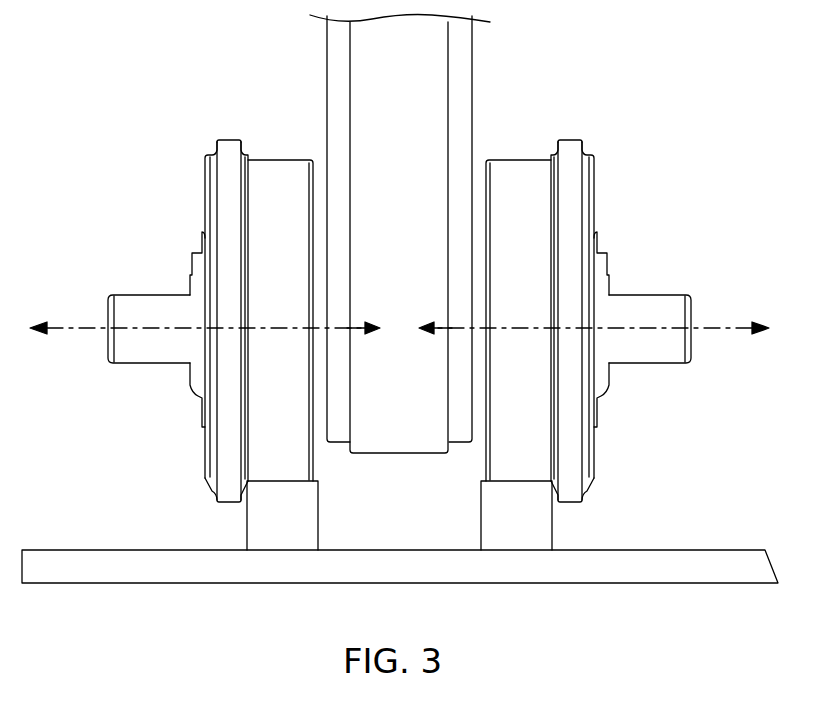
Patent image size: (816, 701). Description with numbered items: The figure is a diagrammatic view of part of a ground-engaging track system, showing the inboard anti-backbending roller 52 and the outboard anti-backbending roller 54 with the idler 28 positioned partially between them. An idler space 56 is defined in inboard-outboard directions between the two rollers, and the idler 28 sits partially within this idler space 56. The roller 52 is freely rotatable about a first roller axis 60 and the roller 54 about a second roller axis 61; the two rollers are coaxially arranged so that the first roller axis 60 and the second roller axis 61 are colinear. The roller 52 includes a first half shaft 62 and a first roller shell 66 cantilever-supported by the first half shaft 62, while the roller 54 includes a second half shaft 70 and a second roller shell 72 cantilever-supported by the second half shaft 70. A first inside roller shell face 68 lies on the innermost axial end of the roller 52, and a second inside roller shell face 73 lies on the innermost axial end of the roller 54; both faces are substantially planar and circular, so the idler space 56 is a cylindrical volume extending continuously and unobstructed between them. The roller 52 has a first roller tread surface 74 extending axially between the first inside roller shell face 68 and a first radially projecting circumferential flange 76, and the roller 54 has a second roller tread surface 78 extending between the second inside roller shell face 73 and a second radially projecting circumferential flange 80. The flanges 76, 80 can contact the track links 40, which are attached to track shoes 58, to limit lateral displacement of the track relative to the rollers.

The idler 28 is at (441, 42).
The idler space 56 is at (372, 465).
The inboard anti-backbending roller 52 is at (209, 292).
The outboard anti-backbending roller 54 is at (588, 292).
The first radially projecting circumferential flange 76 is at (232, 139).
The second radially projecting circumferential flange 80 is at (568, 139).
The first roller tread surface 74 is at (303, 291).
The second roller tread surface 78 is at (494, 291).
The first roller shell 66 is at (258, 468).
The second roller shell 72 is at (541, 468).
The first inside roller shell face 68 is at (302, 469).
The second inside roller shell face 73 is at (495, 469).
The first half shaft 62 is at (146, 295).
The second half shaft 70 is at (650, 295).
The first roller axis 60 is at (83, 330).
The second roller axis 61 is at (712, 330).
The track links 40 is at (247, 516).
The track shoes 58 is at (700, 567).